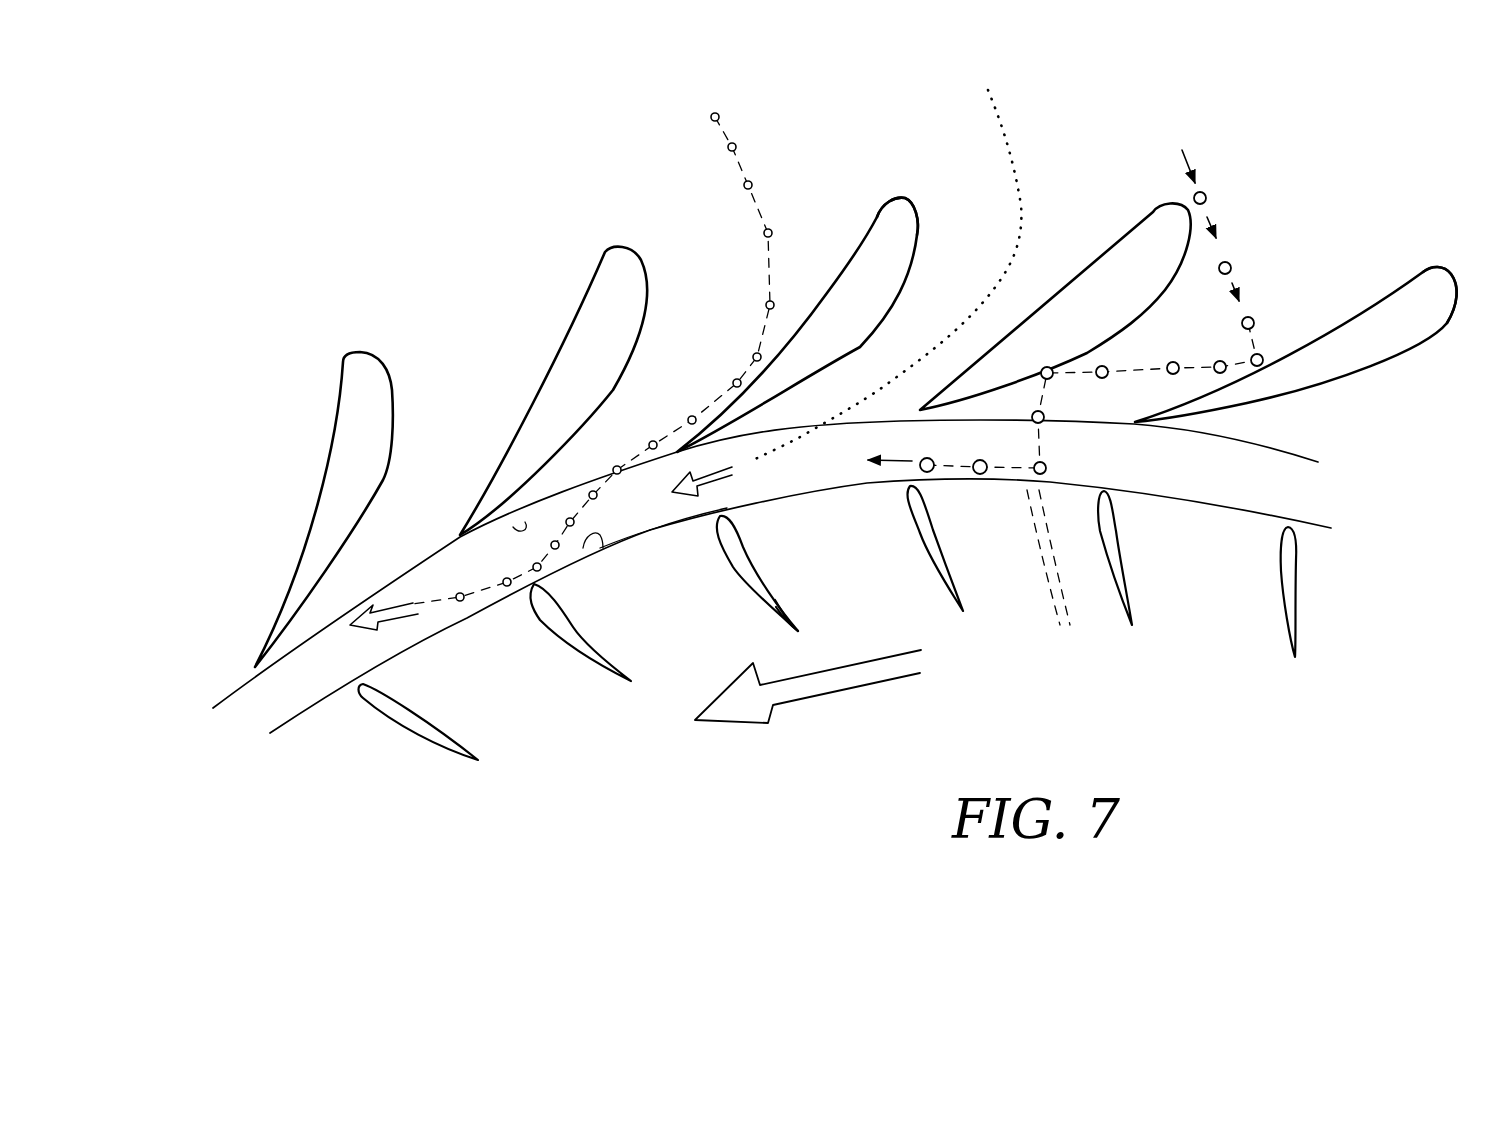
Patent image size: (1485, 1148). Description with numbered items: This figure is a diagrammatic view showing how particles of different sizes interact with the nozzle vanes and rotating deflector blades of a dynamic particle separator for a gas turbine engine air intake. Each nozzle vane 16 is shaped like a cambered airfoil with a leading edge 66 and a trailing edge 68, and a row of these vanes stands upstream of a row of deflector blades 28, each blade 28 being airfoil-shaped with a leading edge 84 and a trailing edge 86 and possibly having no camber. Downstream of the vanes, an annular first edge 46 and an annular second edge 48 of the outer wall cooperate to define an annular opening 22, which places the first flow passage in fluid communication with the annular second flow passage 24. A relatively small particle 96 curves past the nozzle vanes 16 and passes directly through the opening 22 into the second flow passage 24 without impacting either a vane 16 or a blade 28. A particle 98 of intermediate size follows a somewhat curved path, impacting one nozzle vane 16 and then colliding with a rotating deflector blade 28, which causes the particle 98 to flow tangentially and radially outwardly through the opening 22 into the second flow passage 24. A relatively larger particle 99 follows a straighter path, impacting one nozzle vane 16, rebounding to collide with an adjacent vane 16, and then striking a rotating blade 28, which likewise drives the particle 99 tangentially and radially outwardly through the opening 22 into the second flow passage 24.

The vane 16 is at (865, 222).
The annular opening 22 is at (632, 517).
The annular second flow passage 24 is at (683, 513).
The blade 28 is at (782, 607).
The annular first edge 46 is at (600, 548).
The annular second edge 48 is at (513, 527).
The leading edge 66 is at (896, 203).
The trailing edge 68 is at (679, 453).
The leading edge 84 is at (727, 508).
The trailing edge 86 is at (798, 632).
The particle 96 is at (1003, 122).
The particle 98 is at (718, 115).
The particle 99 is at (1207, 195).